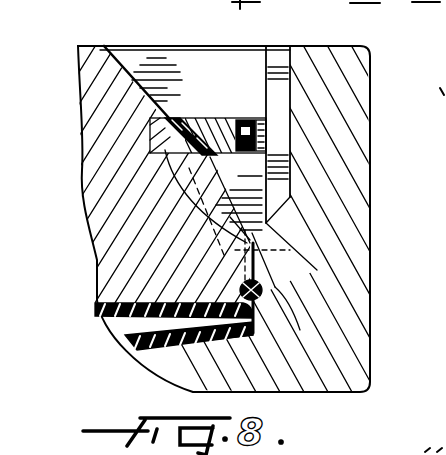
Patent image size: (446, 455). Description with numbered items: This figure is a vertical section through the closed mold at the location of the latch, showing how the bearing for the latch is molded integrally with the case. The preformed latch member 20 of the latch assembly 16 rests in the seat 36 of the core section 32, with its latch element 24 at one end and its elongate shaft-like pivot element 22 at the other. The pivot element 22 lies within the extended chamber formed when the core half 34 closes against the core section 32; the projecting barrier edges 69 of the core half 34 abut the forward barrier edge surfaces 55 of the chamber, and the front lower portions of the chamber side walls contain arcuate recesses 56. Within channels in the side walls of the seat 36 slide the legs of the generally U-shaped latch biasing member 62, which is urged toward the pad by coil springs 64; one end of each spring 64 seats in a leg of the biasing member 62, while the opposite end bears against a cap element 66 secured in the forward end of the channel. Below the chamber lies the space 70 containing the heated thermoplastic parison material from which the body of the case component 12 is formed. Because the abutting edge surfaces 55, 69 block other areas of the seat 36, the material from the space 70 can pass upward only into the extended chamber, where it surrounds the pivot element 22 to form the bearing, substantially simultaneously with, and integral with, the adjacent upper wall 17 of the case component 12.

The case component 12 is at (160, 357).
The latch assembly 16 is at (160, 130).
The upper wall 17 is at (148, 303).
The latch member 20 is at (232, 172).
The pivot element 22 is at (263, 296).
The latch element 24 is at (194, 117).
The core section 32 is at (98, 36).
The core half 34 is at (370, 184).
The seat 36 is at (191, 62).
The barrier edge surfaces 55 is at (238, 253).
The arcuate recesses 56 is at (260, 292).
The latch biasing member 62 is at (267, 80).
The resiliently extensible and compressible members 64 is at (262, 122).
The cap elements 66 is at (268, 140).
The barrier edges 69 is at (215, 231).
The space 70 is at (133, 330).